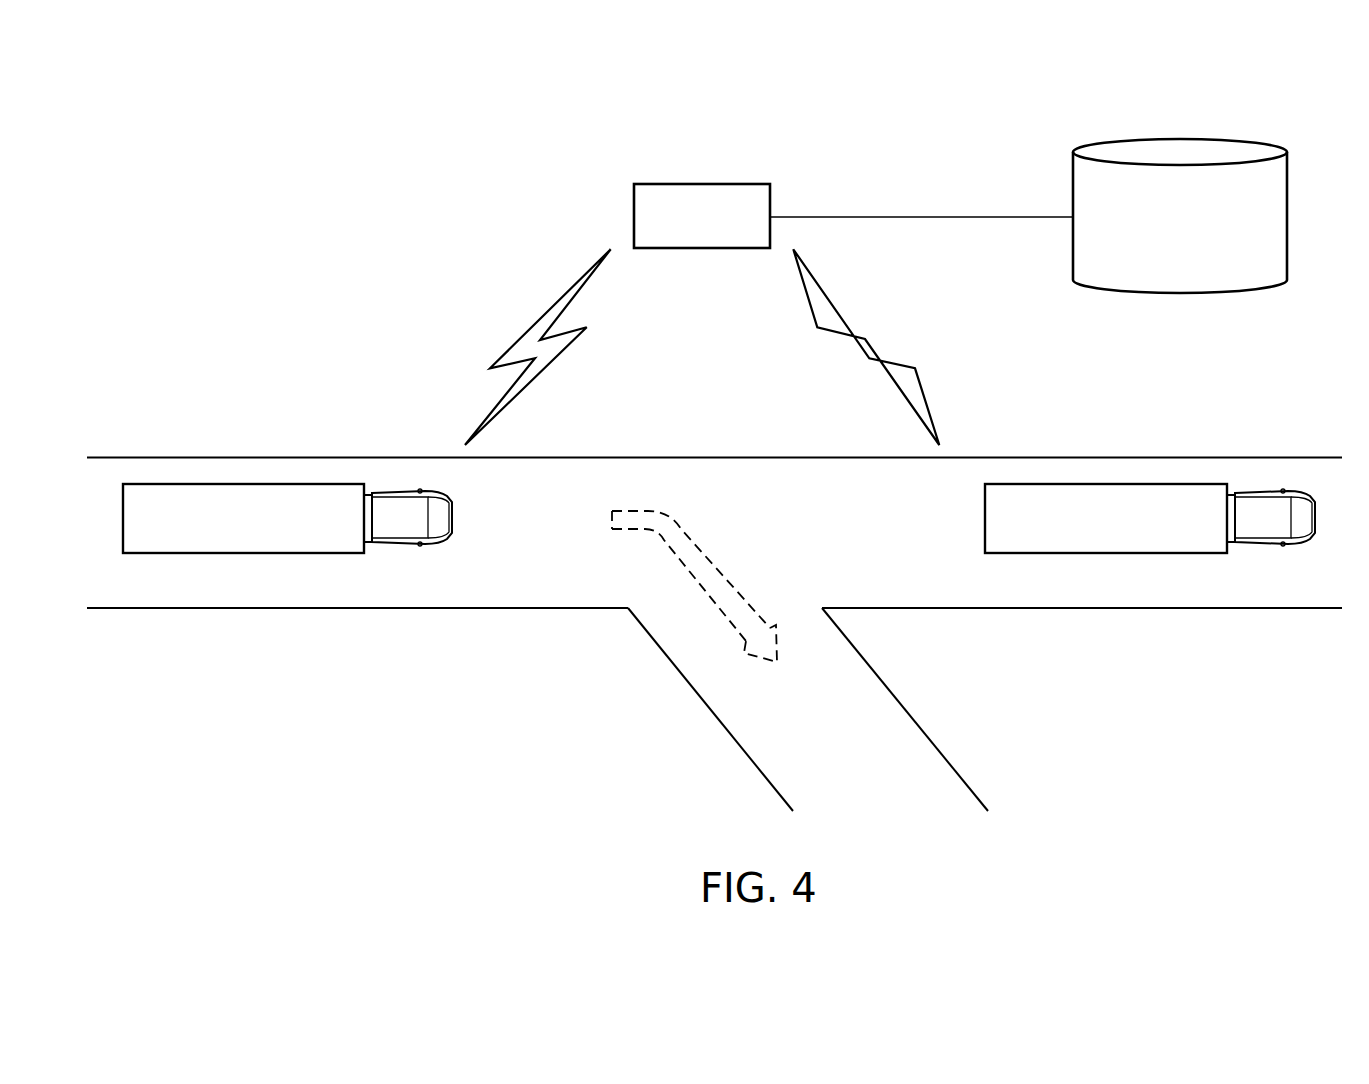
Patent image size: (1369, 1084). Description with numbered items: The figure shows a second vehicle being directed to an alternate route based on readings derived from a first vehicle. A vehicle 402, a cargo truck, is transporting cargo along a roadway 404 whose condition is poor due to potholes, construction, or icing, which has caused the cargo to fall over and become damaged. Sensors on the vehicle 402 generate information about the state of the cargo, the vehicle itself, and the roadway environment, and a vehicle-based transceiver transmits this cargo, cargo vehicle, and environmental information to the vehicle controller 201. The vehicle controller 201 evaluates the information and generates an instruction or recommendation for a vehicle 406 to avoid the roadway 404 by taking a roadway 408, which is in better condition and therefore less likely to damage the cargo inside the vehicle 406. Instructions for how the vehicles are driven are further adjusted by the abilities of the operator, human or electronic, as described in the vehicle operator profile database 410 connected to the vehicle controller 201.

The vehicle controller 201 is at (702, 184).
The vehicle operator profile database 410 is at (1176, 139).
The vehicle 402 is at (1134, 531).
The roadway 404 is at (1242, 596).
The vehicle 406 is at (270, 531).
The roadway 408 is at (877, 801).